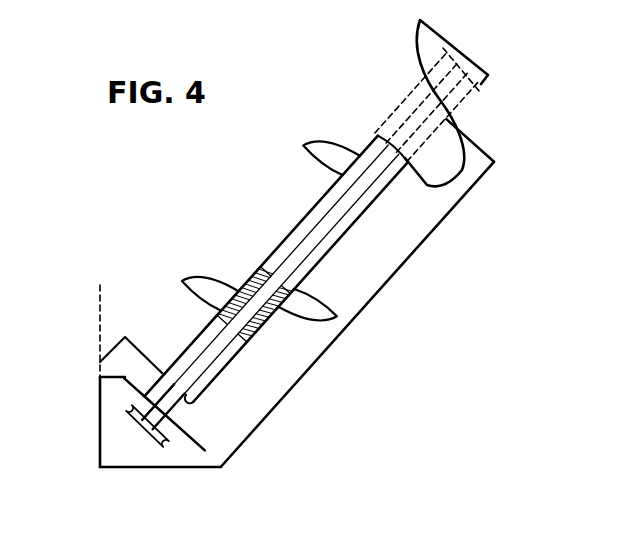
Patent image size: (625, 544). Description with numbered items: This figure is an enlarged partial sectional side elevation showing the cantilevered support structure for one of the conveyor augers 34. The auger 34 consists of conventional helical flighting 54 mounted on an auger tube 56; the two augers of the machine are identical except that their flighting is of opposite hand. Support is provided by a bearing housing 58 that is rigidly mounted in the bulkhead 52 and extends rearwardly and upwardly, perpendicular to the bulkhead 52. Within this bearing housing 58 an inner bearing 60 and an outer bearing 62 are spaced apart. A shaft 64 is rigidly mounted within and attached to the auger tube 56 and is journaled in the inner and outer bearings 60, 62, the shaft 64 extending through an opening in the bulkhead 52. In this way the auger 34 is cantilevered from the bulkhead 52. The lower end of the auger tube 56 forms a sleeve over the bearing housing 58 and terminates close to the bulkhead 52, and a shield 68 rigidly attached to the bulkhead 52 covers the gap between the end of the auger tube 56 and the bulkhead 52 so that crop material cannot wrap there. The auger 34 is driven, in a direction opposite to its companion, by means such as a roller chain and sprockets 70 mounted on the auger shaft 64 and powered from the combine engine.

The conveyor auger 34 is at (466, 130).
The bulkhead 52 is at (201, 455).
The helical flighting 54 is at (305, 143).
The auger tube 56 is at (400, 108).
The bearing housing 58 is at (120, 391).
The inner bearing 60 is at (258, 322).
The outer bearing 62 is at (200, 392).
The shaft 64 is at (322, 220).
The shield 68 is at (121, 341).
The roller chain and sprockets 70 is at (125, 407).